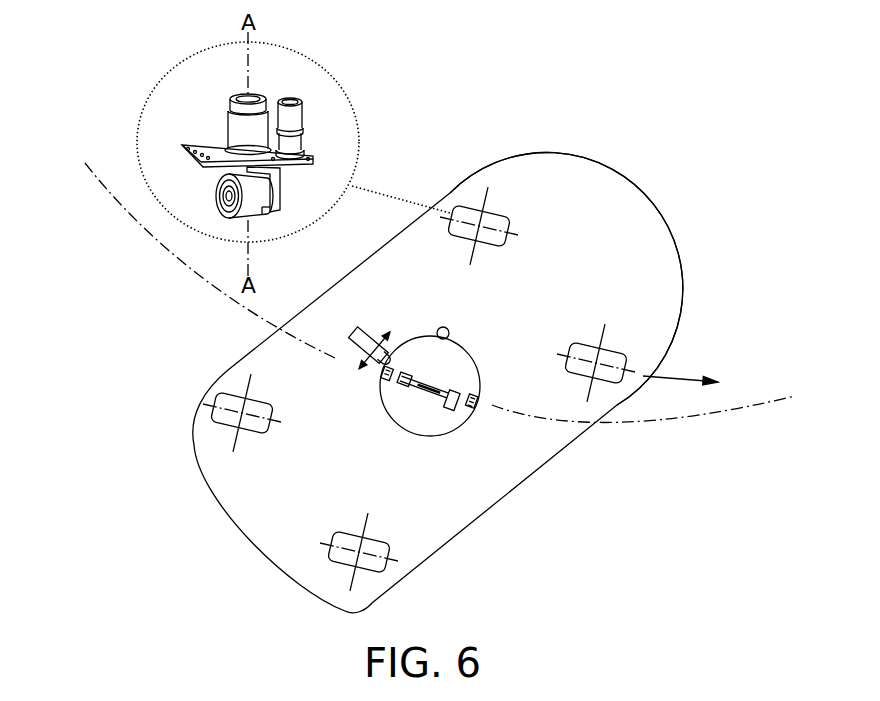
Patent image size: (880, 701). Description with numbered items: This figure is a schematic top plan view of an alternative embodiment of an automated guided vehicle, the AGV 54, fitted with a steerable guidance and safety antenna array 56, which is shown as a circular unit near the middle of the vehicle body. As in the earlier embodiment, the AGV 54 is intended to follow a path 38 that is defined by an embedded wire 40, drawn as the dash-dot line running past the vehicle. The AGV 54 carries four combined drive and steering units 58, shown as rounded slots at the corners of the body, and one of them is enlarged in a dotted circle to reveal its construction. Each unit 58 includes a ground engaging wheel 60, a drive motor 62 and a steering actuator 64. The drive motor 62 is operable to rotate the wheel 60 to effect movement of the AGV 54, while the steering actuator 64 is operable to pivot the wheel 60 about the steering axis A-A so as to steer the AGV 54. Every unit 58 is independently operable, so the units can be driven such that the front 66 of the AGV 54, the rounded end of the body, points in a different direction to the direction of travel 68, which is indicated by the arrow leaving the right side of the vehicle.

The path 38 is at (125, 212).
The embedded wire 40 is at (643, 409).
The AGV 54 is at (553, 180).
The steerable guidance and safety antenna array 56 is at (482, 348).
The combined drive and steering unit 58 is at (302, 75).
The ground engaging wheel 60 is at (257, 210).
The drive motor 62 is at (228, 128).
The steering actuator 64 is at (303, 117).
The front 66 is at (620, 187).
The direction of travel 68 is at (680, 374).